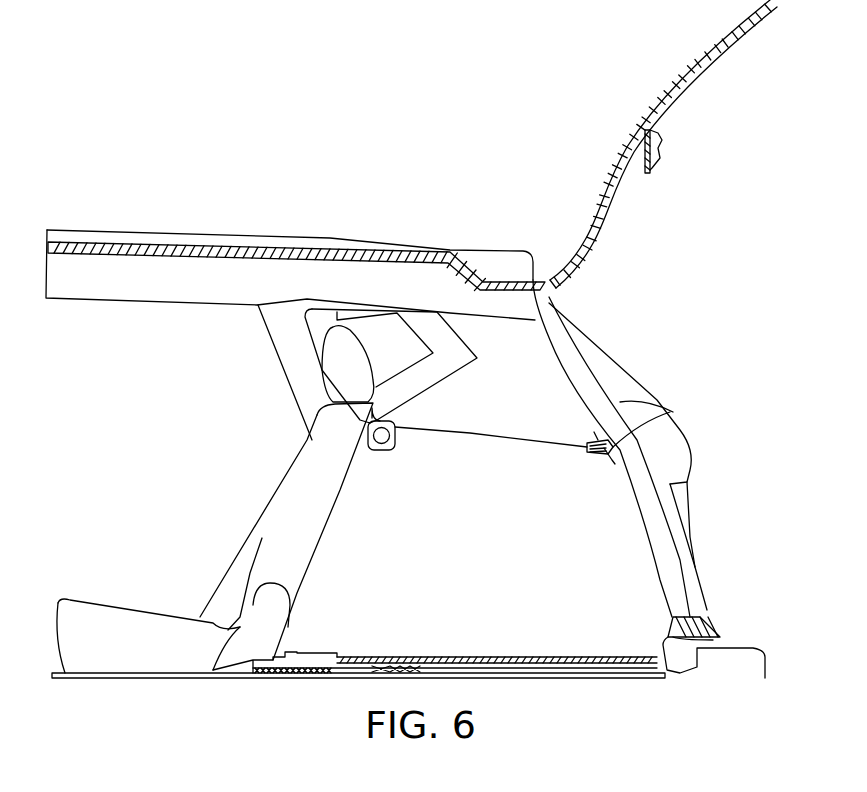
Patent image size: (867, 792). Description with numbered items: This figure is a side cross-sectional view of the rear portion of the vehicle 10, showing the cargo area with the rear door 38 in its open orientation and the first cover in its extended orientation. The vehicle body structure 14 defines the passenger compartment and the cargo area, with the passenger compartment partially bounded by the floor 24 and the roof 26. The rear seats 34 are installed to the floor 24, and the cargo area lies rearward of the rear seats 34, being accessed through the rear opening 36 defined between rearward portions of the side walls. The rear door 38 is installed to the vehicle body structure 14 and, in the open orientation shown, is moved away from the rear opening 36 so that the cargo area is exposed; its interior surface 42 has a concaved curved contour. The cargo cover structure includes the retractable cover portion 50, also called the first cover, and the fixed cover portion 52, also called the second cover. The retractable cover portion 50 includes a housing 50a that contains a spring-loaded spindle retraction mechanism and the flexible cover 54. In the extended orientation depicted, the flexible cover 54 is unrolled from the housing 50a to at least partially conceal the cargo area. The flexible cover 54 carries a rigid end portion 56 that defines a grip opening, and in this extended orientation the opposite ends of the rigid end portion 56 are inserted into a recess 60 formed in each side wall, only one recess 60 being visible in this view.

The vehicle 10 is at (113, 164).
The vehicle body structure 14 is at (310, 240).
The roof 26 is at (203, 246).
The floor 24 is at (511, 655).
The rear seats 34 is at (307, 490).
The rear opening 36 is at (668, 518).
The rear door 38 is at (688, 72).
The interior surface 42 is at (670, 100).
The retractable cover portion 50 is at (380, 453).
The housing 50a is at (395, 416).
The fixed cover portion 52 is at (660, 164).
The flexible cover 54 is at (485, 437).
The rigid end portion 56 is at (673, 412).
The recess 60 is at (598, 456).